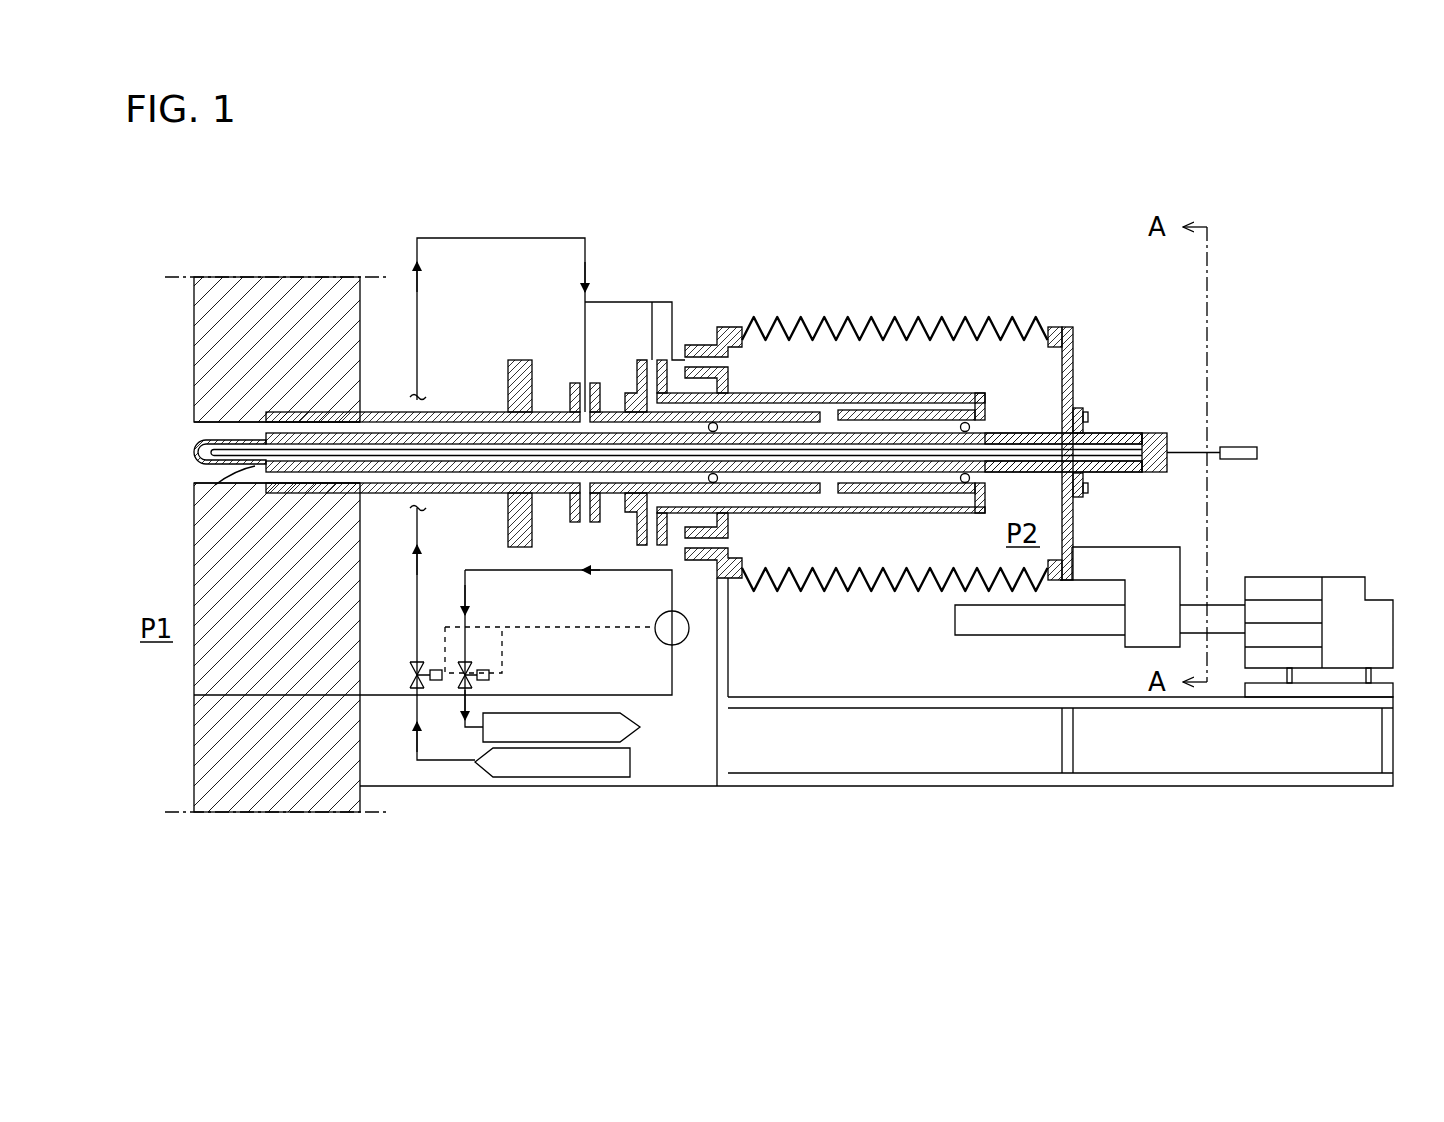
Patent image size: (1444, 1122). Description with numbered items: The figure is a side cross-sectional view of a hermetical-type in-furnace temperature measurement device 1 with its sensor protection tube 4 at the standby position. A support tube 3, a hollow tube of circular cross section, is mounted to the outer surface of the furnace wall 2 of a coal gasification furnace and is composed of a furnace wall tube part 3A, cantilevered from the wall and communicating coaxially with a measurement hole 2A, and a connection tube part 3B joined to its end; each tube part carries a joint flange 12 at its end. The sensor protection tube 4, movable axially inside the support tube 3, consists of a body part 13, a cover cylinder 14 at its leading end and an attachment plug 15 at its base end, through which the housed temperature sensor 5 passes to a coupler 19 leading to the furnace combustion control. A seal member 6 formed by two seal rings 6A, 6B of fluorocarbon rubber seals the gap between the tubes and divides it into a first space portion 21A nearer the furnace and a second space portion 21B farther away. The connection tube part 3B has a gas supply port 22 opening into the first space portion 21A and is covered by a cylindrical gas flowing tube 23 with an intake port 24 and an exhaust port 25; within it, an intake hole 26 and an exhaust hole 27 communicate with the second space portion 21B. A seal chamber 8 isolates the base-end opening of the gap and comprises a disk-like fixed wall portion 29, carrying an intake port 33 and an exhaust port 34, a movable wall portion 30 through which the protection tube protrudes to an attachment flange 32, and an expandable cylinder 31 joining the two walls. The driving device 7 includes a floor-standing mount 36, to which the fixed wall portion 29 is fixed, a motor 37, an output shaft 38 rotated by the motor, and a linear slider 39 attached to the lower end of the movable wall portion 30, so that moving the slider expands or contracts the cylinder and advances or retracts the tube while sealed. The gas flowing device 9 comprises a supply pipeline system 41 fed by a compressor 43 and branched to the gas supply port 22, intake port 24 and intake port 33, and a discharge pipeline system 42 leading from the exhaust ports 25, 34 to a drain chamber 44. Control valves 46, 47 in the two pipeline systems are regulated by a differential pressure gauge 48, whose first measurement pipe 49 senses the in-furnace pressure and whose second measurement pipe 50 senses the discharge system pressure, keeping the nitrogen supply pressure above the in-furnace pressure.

The in-furnace temperature measurement device 1 is at (1275, 345).
The furnace wall 2 is at (230, 290).
The measurement hole 2A is at (205, 436).
The support tube 3 is at (622, 365).
The furnace wall tube part 3A is at (318, 410).
The connection tube part 3B is at (912, 400).
The sensor protection tube 4 is at (445, 434).
The temperature sensor 5 is at (372, 452).
The seal member 6 is at (892, 414).
The seal ring 6A is at (752, 345).
The seal ring 6B is at (970, 420).
The driving device 7 is at (1199, 585).
The seal chamber 8 is at (1062, 312).
The gas flowing device 9 is at (662, 703).
The joint flange 12 is at (518, 360).
The body part 13 is at (1015, 434).
The cover cylinder 14 is at (215, 485).
The attachment plug 15 is at (1157, 434).
The coupler 19 is at (1245, 448).
The first space portion 21A is at (418, 633).
The second space portion 21B is at (790, 420).
The gas supply port 22 is at (597, 383).
The gas flowing tube 23 is at (800, 592).
The intake port 24 is at (636, 380).
The exhaust port 25 is at (637, 525).
The intake hole 26 is at (848, 400).
The exhaust hole 27 is at (820, 513).
The fixed wall portion 29 is at (728, 330).
The movable wall portion 30 is at (1075, 365).
The expandable cylinder 31 is at (872, 592).
The attachment flange 32 is at (1082, 497).
The intake port 33 is at (700, 345).
The exhaust port 34 is at (728, 630).
The mount 36 is at (975, 787).
The motor 37 is at (1395, 625).
The output shaft 38 is at (1030, 636).
The linear slider 39 is at (1165, 547).
The supply pipeline system 41 is at (472, 238).
The discharge pipeline system 42 is at (483, 570).
The compressor 43 is at (525, 778).
The drain chamber 44 is at (633, 745).
The control valve 46 is at (410, 672).
The control valve 47 is at (470, 668).
The differential pressure gauge 48 is at (700, 744).
The first measurement pipe 49 is at (238, 700).
The second measurement pipe 50 is at (672, 590).